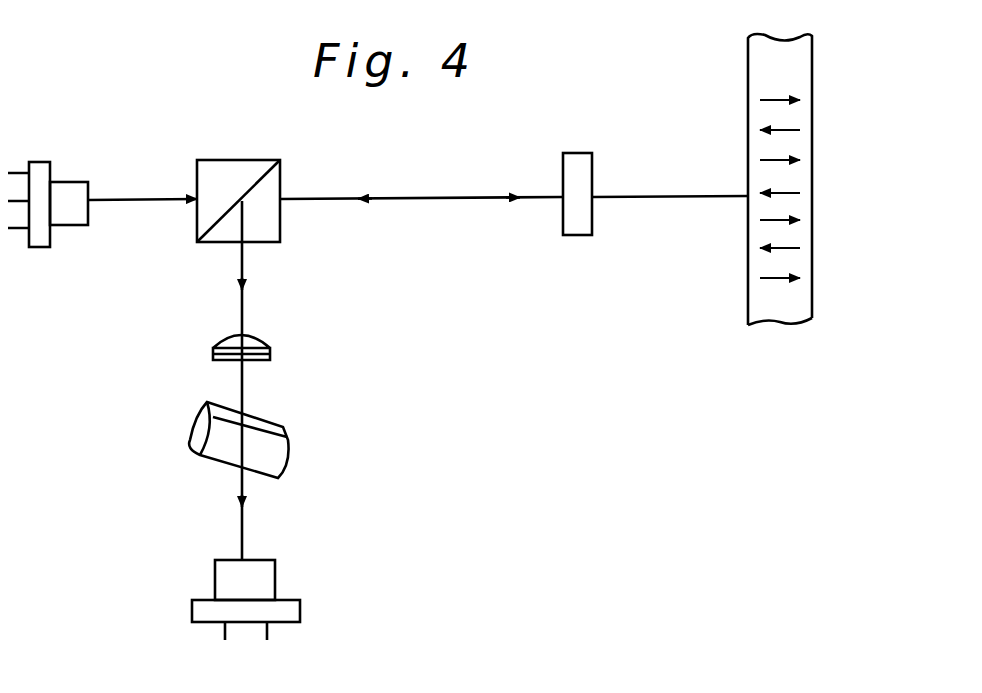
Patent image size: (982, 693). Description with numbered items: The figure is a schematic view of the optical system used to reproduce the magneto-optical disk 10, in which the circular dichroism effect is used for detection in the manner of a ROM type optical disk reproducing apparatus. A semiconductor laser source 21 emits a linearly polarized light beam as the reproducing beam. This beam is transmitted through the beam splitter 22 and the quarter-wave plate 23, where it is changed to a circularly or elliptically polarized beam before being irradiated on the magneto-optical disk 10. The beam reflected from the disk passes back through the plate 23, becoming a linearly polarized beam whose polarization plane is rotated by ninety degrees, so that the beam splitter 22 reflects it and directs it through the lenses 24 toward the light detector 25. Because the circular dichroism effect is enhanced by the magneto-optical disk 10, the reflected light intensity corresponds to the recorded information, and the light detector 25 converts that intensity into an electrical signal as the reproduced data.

The magneto-optical disk 10 is at (800, 237).
The semiconductor laser source 21 is at (68, 226).
The beam splitter 22 is at (265, 243).
The λ/4 plate 23 is at (575, 236).
The lenses 24 is at (270, 352).
The light detector 25 is at (275, 572).